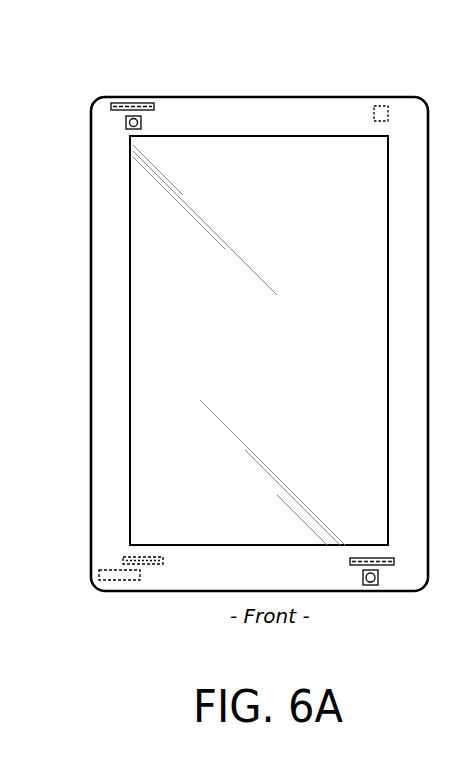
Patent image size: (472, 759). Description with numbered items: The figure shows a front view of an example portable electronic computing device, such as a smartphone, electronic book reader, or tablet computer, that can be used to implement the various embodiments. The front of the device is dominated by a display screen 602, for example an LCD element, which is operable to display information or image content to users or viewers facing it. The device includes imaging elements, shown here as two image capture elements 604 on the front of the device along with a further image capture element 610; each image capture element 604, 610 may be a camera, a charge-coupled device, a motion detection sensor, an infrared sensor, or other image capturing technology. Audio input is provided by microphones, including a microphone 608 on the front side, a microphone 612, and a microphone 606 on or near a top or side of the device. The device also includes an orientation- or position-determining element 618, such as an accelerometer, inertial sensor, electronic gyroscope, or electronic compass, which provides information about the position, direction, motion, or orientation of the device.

The display screen 602 is at (129, 255).
The image capture element 604 is at (125, 122).
The microphone 606 is at (142, 103).
The microphone 608 is at (387, 565).
The image capture element 610 is at (376, 108).
The microphone 612 is at (143, 565).
The orientation- or position-determining element 618 is at (119, 580).